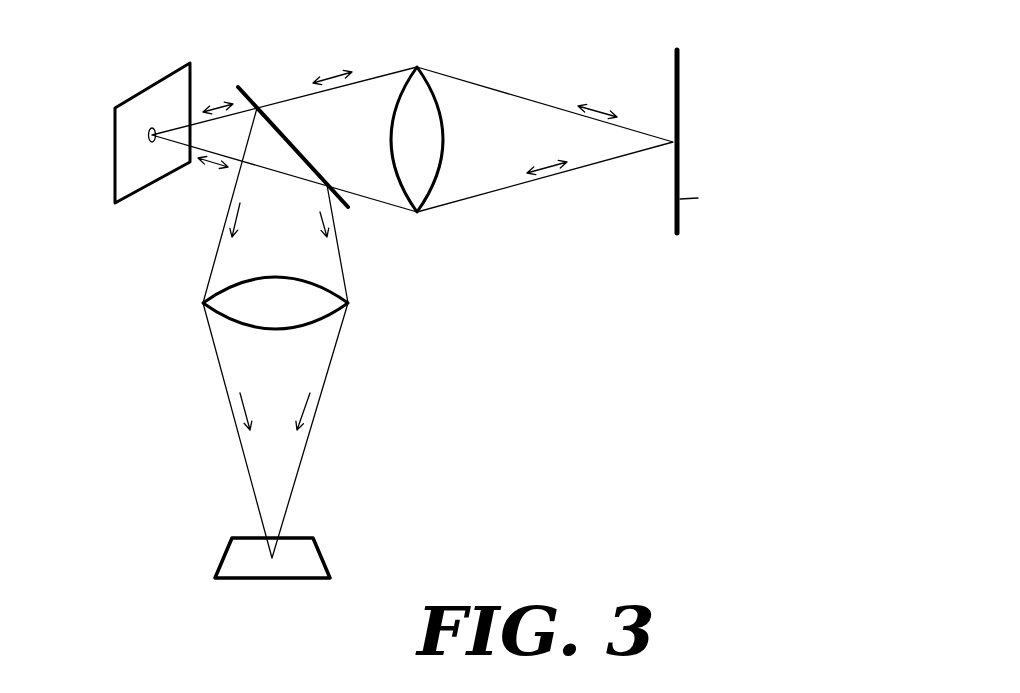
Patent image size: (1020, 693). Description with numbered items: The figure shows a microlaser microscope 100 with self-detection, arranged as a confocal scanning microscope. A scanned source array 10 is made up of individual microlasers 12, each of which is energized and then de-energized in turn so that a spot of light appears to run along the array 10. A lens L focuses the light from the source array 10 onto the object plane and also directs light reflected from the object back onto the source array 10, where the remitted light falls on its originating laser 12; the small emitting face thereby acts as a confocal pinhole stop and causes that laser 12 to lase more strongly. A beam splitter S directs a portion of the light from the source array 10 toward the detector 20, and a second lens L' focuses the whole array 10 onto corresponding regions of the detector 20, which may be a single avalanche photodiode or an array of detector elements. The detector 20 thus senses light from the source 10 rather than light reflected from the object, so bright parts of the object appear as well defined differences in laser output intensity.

The microlaser microscope 100 is at (777, 15).
The scanned source array 10 is at (145, 90).
The microlaser 12 is at (148, 133).
The detector 20 is at (307, 563).
The beam splitter S is at (257, 90).
The lens L is at (420, 159).
The lens L' is at (300, 303).